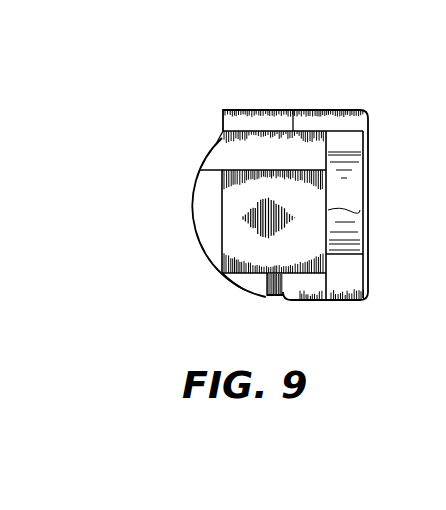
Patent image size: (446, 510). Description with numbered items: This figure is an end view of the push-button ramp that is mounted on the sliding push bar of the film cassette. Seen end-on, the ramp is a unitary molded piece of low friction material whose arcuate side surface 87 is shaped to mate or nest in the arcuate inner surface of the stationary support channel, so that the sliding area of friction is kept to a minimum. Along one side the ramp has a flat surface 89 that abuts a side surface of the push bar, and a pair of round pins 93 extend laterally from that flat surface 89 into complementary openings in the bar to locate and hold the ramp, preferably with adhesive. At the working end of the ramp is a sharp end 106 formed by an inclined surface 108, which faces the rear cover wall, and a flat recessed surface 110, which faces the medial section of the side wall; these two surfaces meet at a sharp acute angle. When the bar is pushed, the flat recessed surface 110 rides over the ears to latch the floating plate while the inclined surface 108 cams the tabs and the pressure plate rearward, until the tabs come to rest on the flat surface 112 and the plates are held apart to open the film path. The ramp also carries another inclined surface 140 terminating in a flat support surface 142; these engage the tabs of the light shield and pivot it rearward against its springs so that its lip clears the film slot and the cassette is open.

The arcuate side surface 87 is at (191, 209).
The flat surface 89 is at (355, 213).
The round pin 93 is at (352, 187).
The sharp end 106 is at (263, 296).
The inclined surface 108 is at (232, 222).
The flat recessed surface 110 is at (235, 284).
The flat surface 112 is at (230, 170).
The inclined surface 140 is at (262, 131).
The flat support surface 142 is at (293, 110).